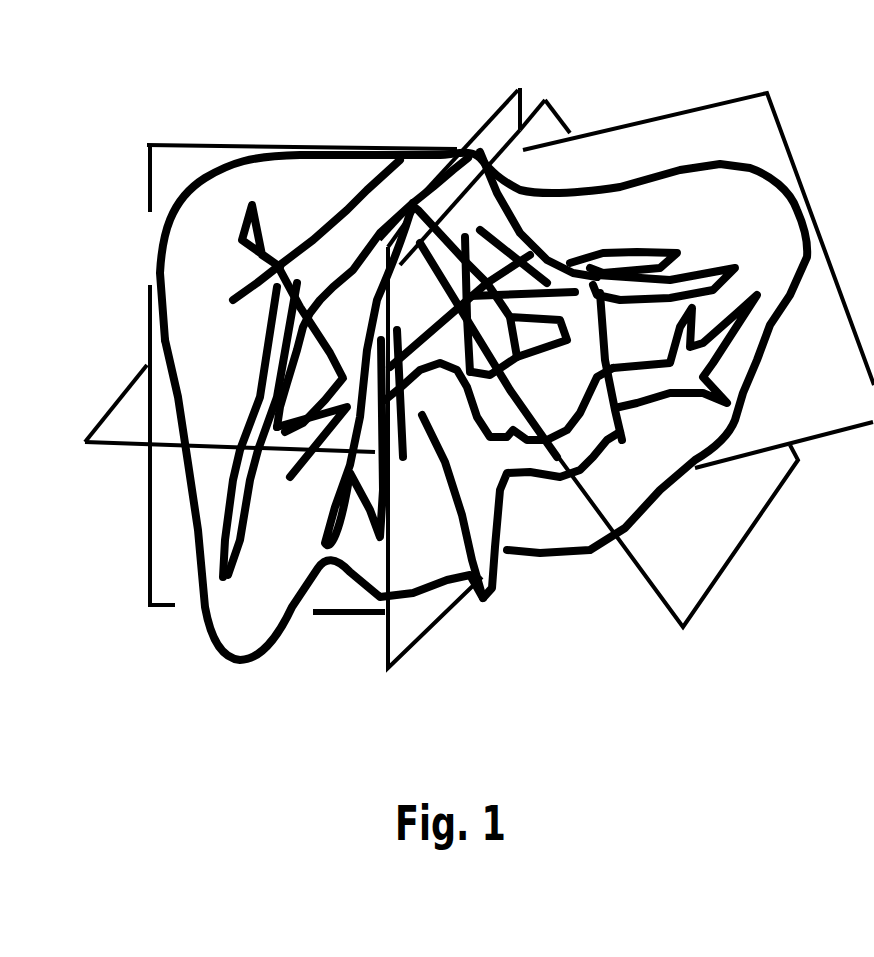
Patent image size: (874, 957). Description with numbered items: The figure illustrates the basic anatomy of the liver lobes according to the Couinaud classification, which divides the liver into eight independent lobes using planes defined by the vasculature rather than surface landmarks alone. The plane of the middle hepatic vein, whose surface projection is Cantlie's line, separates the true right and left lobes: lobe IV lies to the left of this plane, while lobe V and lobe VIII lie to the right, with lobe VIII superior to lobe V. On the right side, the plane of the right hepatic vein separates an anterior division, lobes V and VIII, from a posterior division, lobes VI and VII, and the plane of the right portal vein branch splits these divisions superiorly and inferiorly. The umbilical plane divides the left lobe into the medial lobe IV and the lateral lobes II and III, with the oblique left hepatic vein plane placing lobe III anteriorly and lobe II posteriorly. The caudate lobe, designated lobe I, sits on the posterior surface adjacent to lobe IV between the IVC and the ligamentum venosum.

The lobe I is at (508, 100).
The lobe II is at (662, 113).
The lobe III is at (662, 428).
The lobe IV is at (480, 503).
The lobe V is at (197, 487).
The lobe VI is at (355, 622).
The lobe VII is at (333, 125).
The lobe VIII is at (152, 305).